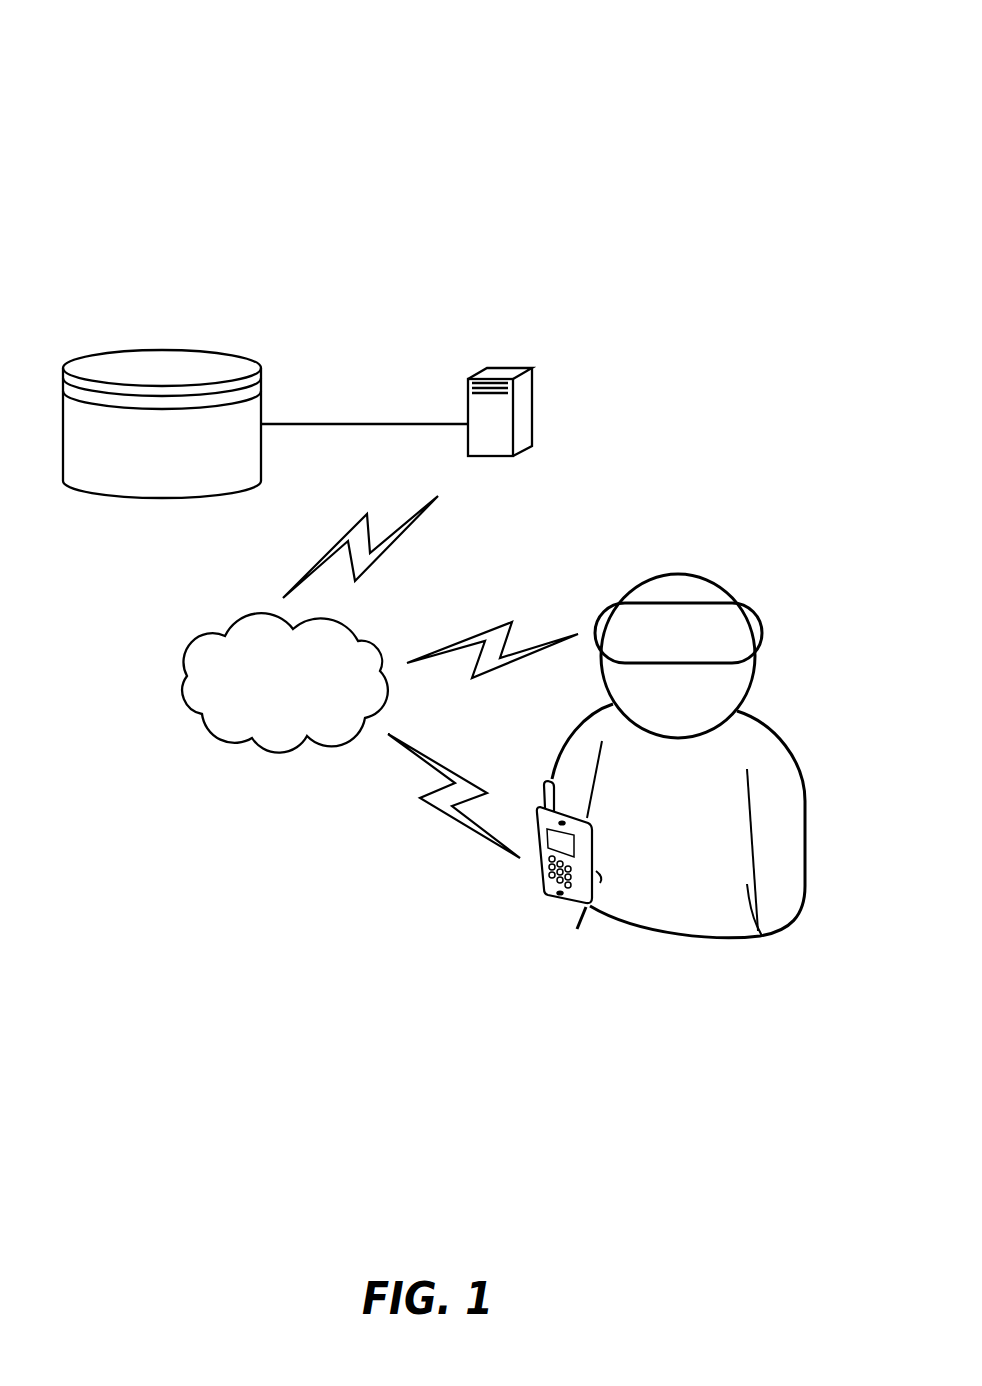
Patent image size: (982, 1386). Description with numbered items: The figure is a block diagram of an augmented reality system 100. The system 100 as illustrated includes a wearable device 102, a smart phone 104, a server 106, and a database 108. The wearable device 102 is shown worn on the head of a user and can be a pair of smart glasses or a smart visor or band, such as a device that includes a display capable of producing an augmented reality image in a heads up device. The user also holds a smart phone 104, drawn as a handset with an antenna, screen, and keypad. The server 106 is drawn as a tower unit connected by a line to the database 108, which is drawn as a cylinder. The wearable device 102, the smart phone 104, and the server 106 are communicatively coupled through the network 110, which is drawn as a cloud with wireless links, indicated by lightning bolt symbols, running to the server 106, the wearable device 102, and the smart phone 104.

The augmented reality system 100 is at (710, 48).
The wearable device 102 is at (742, 628).
The smart phone 104 is at (582, 852).
The server 106 is at (514, 365).
The database 108 is at (138, 345).
The network 110 is at (357, 625).